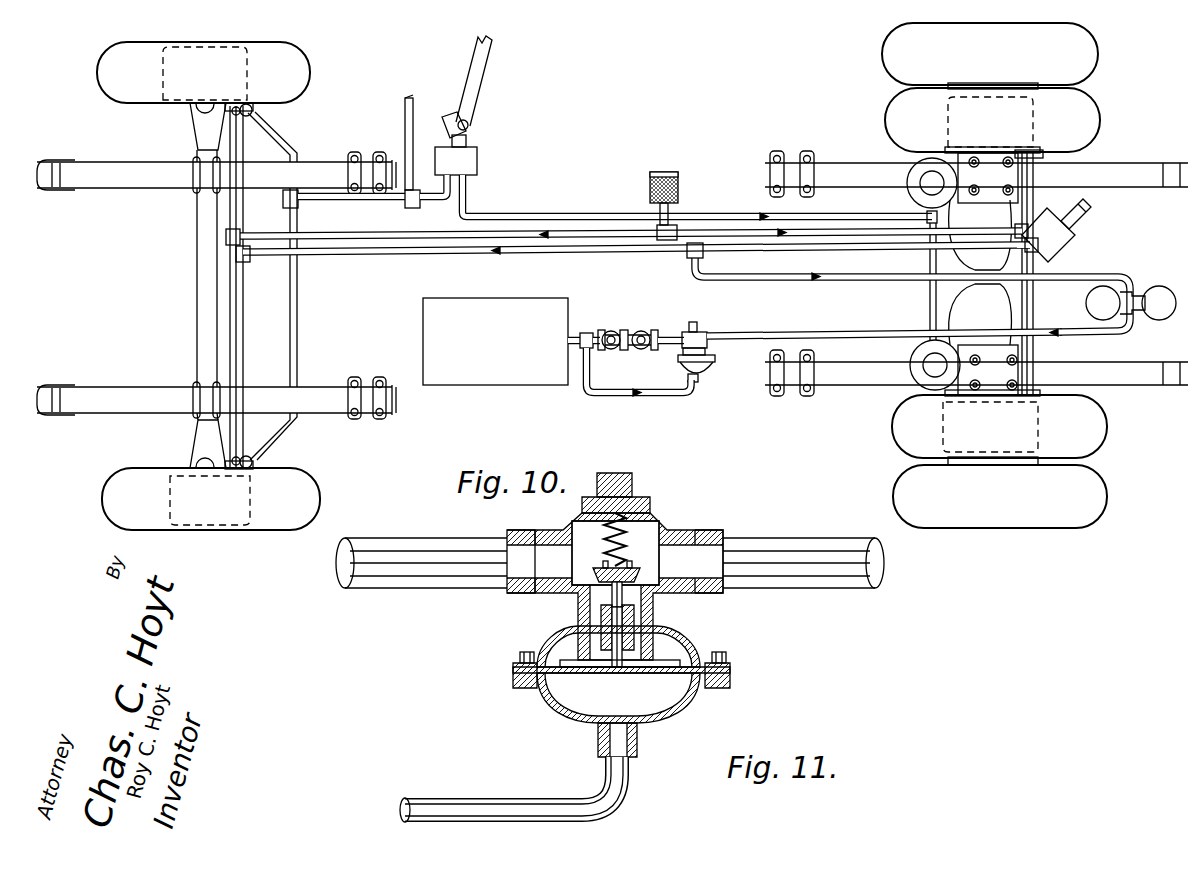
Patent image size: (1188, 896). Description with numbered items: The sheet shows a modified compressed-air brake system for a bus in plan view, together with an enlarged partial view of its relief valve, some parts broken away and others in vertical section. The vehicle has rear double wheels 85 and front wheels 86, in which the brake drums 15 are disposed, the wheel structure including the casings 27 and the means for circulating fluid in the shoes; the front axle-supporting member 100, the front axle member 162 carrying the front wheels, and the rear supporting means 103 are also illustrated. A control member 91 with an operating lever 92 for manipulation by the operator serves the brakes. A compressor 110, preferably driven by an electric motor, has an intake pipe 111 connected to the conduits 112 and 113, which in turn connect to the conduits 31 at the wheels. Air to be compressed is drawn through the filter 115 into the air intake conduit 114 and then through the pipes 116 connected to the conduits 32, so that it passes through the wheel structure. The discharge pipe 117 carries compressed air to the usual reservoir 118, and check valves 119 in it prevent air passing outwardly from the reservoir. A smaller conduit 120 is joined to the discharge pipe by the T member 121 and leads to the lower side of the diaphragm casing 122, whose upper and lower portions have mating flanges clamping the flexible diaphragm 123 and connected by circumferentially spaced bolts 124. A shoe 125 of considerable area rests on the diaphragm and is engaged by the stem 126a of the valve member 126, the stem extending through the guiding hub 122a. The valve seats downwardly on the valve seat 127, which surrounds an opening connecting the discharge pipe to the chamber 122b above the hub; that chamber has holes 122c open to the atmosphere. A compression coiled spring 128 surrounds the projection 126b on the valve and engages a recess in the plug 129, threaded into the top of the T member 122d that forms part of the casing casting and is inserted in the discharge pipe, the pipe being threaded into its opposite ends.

In FIG. 10, the brake drum 15 is at (1048, 414).
In FIG. 10, the front wheels 86 is at (323, 474).
In FIG. 10, the casing 27 is at (1056, 180).
In FIG. 10, the front axle 162 is at (165, 392).
In FIG. 10, the conduits 32 is at (1021, 297).
In FIG. 10, the front axle-supporting member 100 is at (197, 270).
In FIG. 10, the conduits 31 is at (1036, 297).
In FIG. 10, the conduit 112 is at (348, 247).
In FIG. 10, the pipes or conduits 116 is at (757, 235).
In FIG. 10, the operating lever 92 is at (478, 100).
In FIG. 10, the control member 91 is at (477, 158).
In FIG. 10, the filter 115 is at (678, 186).
In FIG. 10, the air intake conduit 114 is at (676, 209).
In FIG. 10, the conduit 113 is at (838, 253).
In FIG. 10, the intake pipe 111 is at (850, 280).
In FIG. 10, the rear double wheels 85 is at (900, 468).
In FIG. 10, the rear supporting means 103 is at (1070, 350).
In FIG. 10, the compressor 110 is at (1146, 290).
In FIG. 10, the reservoir 118 is at (522, 305).
In FIG. 10, the T member 121 is at (588, 333).
In FIG. 10, the check valves 119 is at (643, 330).
In FIG. 10, the diaphragm 123 is at (707, 331).
In FIG. 11, the diaphragm 123 is at (575, 676).
In FIG. 10, the diaphragm casing 122 is at (700, 367).
In FIG. 11, the diaphragm casing 122 is at (703, 693).
In FIG. 10, the discharge pipe 117 is at (784, 336).
In FIG. 11, the discharge pipe 117 is at (772, 546).
In FIG. 10, the smaller conduit 120 is at (590, 398).
In FIG. 11, the smaller conduit 120 is at (490, 805).
In FIG. 11, the plug 129 is at (632, 485).
In FIG. 11, the T member 122d is at (688, 532).
In FIG. 11, the projection 126b is at (606, 562).
In FIG. 11, the compression coiled spring 128 is at (628, 530).
In FIG. 11, the valve seat 127 is at (580, 576).
In FIG. 11, the valve member 126 is at (660, 568).
In FIG. 11, the holes 122c is at (577, 608).
In FIG. 11, the stem 126a is at (640, 600).
In FIG. 11, the chamber 122b is at (650, 615).
In FIG. 11, the shoe 125 is at (592, 664).
In FIG. 11, the bolts 124 is at (728, 650).
In FIG. 11, the guiding hub 122a is at (623, 650).